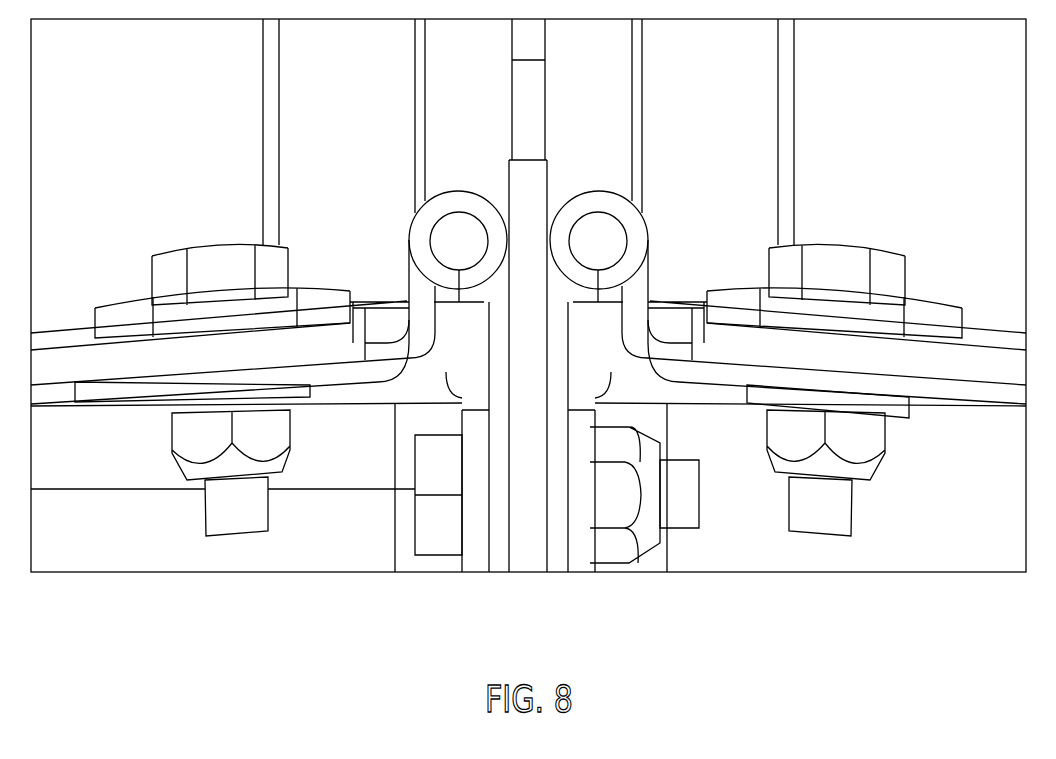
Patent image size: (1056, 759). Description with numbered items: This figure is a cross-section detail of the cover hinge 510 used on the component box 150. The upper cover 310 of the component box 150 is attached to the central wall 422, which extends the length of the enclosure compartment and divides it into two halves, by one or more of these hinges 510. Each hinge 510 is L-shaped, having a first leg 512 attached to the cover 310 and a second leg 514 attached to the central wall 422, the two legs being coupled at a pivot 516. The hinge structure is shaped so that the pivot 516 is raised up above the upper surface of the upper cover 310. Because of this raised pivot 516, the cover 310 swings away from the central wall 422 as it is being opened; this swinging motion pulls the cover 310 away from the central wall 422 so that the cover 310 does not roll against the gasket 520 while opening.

The component box 150 is at (947, 363).
The upper cover 310 is at (385, 300).
The central wall 422 is at (530, 533).
The hinge 510 is at (439, 195).
The first leg 512 is at (497, 533).
The second leg 514 is at (108, 392).
The pivot 516 is at (450, 244).
The gasket 520 is at (485, 348).